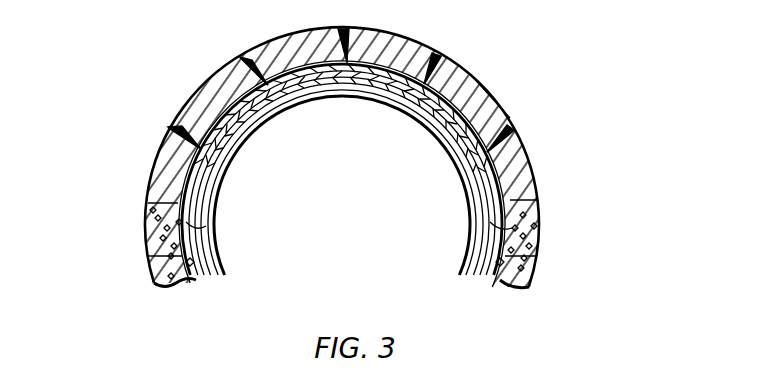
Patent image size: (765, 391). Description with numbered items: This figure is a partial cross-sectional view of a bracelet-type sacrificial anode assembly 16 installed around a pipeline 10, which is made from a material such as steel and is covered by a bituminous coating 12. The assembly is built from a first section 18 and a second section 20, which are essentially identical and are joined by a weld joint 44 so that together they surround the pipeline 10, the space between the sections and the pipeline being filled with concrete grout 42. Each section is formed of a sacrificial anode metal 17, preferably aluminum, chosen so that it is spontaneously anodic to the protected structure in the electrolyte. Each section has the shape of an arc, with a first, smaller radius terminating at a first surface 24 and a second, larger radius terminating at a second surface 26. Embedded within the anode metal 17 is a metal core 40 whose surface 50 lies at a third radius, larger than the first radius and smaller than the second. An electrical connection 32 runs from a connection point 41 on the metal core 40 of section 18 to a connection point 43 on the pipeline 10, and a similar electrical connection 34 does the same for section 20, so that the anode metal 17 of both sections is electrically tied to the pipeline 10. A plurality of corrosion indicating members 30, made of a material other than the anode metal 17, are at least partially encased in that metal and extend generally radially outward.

The pipeline 10 is at (312, 102).
The bituminous coating 12 is at (404, 108).
The sacrificial anode assembly 16 is at (392, 36).
The sacrificial anode metal 17 is at (482, 84).
The first section 18 is at (146, 190).
The second section 20 is at (150, 276).
The first surface 24 is at (456, 170).
The second surface 26 is at (250, 66).
The corrosion indicating members 30 is at (442, 70).
The electrical connection 32 is at (548, 222).
The electrical connection 34 is at (172, 290).
The metal core 40 is at (206, 226).
The connection point 41 is at (516, 152).
The concrete grout 42 is at (152, 215).
The connection point 43 is at (148, 203).
The weld joint 44 is at (160, 232).
The surface 50 is at (194, 122).